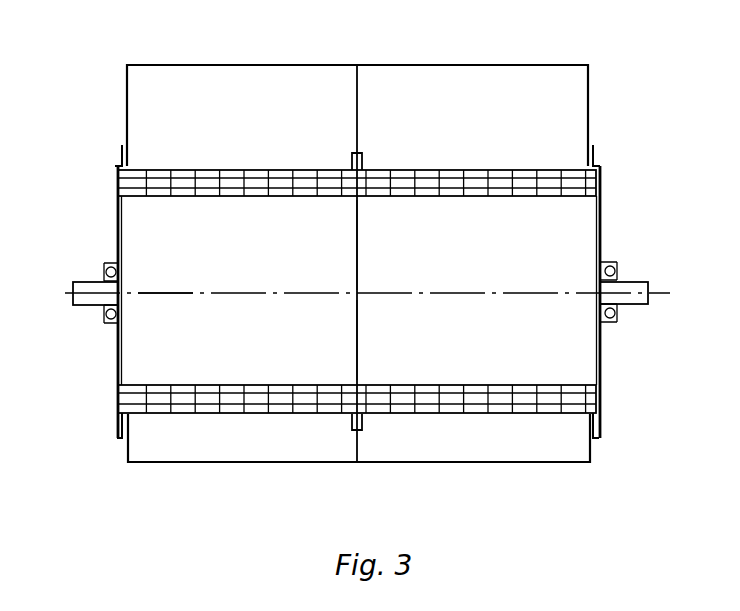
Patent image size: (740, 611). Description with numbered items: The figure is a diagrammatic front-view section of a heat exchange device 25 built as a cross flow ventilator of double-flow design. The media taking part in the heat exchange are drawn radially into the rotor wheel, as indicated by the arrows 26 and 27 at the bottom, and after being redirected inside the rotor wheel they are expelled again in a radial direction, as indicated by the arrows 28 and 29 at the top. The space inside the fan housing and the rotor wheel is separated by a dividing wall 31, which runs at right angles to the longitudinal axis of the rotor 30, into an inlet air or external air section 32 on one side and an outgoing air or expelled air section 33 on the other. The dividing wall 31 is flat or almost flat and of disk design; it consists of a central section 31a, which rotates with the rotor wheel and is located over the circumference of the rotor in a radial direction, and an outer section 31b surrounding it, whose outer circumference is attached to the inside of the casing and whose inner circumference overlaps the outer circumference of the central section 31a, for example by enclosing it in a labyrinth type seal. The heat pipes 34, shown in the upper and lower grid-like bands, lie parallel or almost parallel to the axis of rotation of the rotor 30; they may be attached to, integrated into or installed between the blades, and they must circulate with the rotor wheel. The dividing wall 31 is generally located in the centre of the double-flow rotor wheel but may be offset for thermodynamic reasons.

The dryer housing 25 is at (92, 163).
The arrow 26 is at (322, 436).
The arrow 27 is at (473, 432).
The arrow 28 is at (255, 112).
The arrow 29 is at (475, 100).
The rotor 30 is at (273, 293).
The dividing wall 31 is at (355, 218).
The central section 31a is at (357, 338).
The outer section 31b is at (358, 440).
The inlet air or external air section 32 is at (230, 278).
The outgoing air or expelled air section 33 is at (486, 275).
The heat pipes 34 is at (207, 183).